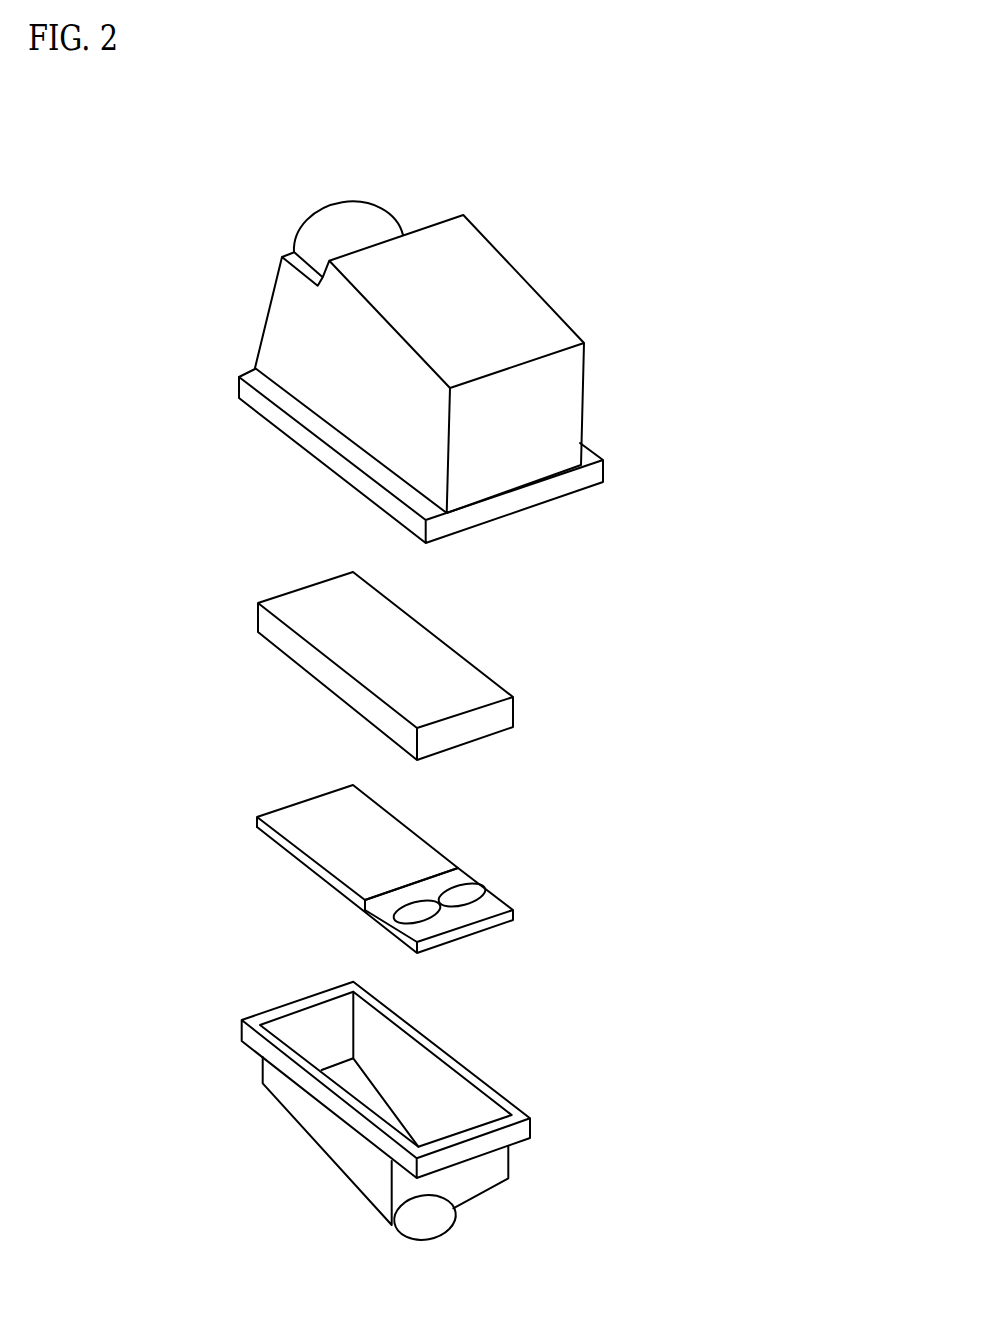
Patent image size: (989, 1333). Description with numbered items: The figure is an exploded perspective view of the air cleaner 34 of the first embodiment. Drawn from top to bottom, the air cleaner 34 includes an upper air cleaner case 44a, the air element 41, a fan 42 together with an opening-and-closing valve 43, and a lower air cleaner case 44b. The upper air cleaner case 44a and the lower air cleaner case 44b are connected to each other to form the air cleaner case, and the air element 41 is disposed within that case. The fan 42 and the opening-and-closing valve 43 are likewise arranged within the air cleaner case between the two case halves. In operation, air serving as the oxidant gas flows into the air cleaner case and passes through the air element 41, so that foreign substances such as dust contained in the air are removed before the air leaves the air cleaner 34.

The air cleaner 34 is at (680, 217).
The upper air cleaner case 44a is at (585, 407).
The air element 41 is at (515, 710).
The fan 42 is at (502, 898).
The opening-and-closing valve 43 is at (308, 808).
The lower air cleaner case 44b is at (518, 1160).